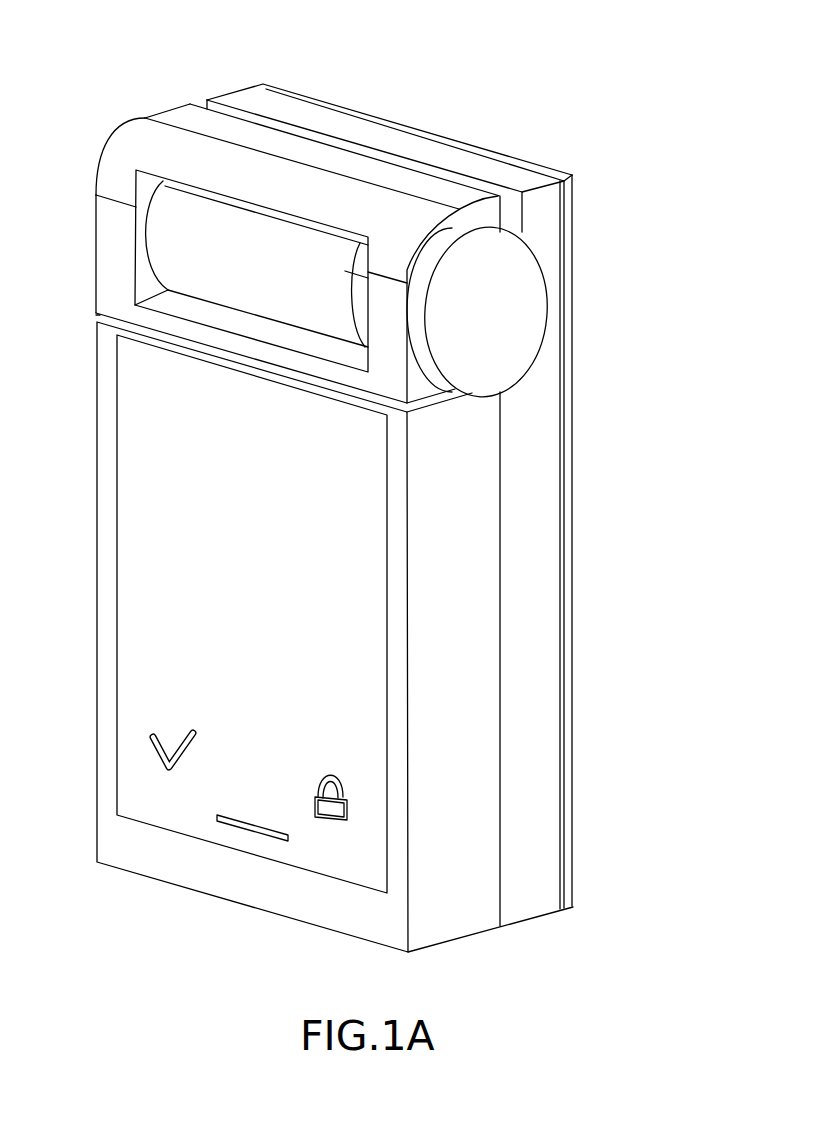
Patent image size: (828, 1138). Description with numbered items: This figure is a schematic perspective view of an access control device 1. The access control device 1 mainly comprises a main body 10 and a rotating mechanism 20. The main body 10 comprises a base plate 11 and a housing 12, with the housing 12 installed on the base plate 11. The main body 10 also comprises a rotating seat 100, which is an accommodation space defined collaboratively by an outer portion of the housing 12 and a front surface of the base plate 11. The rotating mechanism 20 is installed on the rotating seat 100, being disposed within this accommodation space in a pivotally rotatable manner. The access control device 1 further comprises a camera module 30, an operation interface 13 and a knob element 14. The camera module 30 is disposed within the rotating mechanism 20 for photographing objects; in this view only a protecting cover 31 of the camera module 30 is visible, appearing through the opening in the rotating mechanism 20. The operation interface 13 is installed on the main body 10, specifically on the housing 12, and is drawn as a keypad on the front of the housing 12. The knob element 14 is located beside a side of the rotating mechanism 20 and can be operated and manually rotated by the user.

The access control device 1 is at (156, 69).
The main body 10 is at (657, 358).
The rotating seat 100 is at (453, 177).
The base plate 11 is at (537, 662).
The housing 12 is at (108, 645).
The operation interface 13 is at (137, 487).
The knob element 14 is at (522, 296).
The rotating mechanism 20 is at (110, 262).
The camera module 30 is at (251, 271).
The protecting cover 31 is at (255, 237).